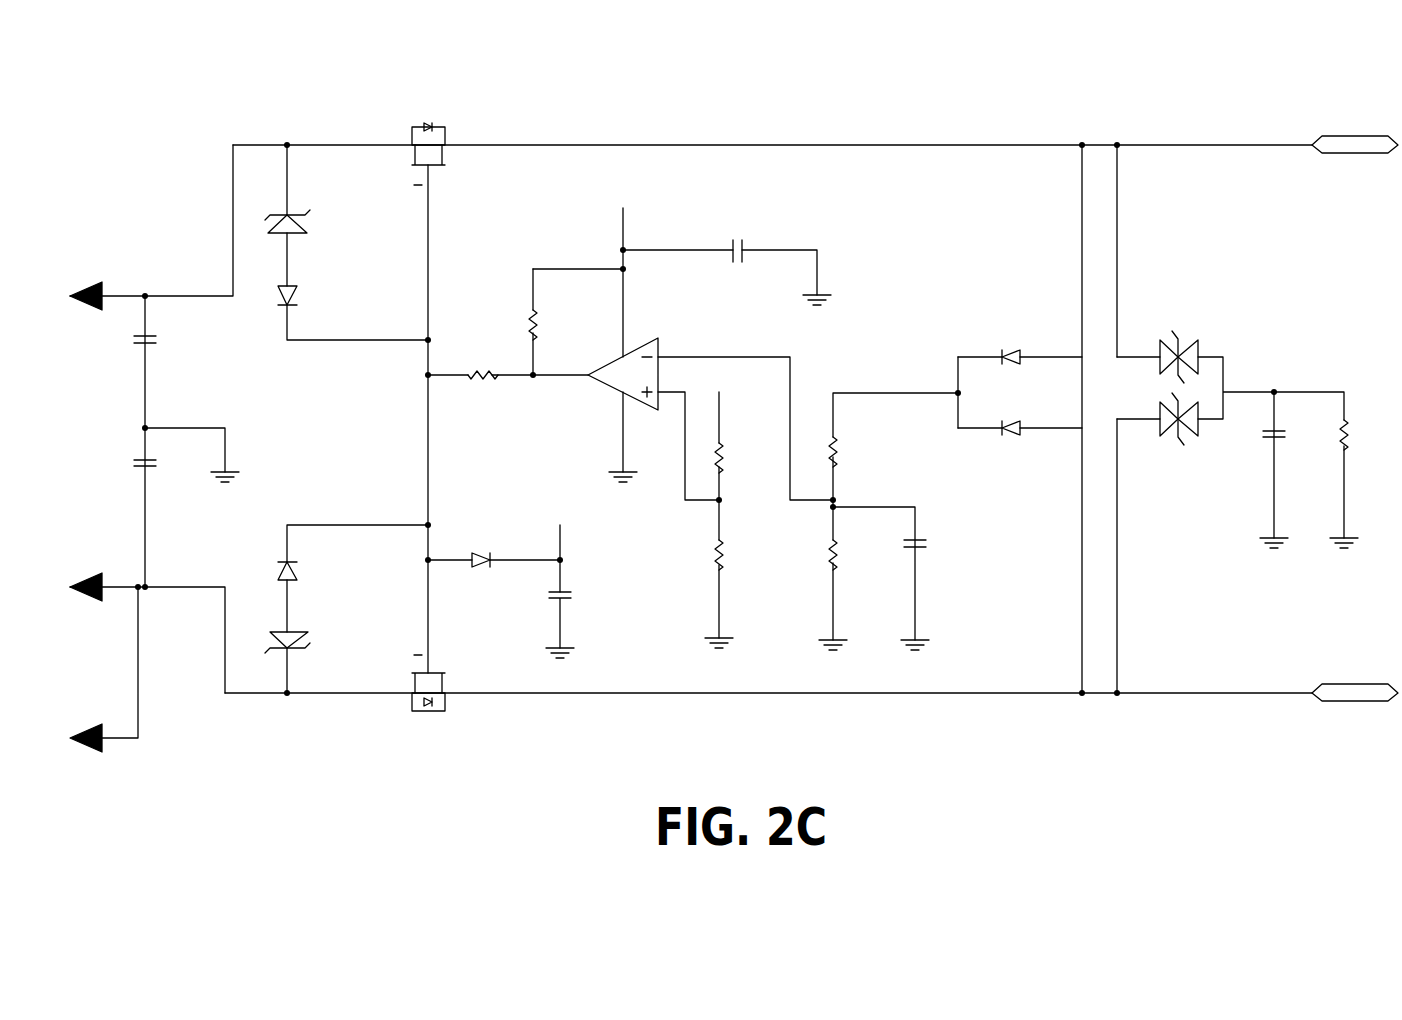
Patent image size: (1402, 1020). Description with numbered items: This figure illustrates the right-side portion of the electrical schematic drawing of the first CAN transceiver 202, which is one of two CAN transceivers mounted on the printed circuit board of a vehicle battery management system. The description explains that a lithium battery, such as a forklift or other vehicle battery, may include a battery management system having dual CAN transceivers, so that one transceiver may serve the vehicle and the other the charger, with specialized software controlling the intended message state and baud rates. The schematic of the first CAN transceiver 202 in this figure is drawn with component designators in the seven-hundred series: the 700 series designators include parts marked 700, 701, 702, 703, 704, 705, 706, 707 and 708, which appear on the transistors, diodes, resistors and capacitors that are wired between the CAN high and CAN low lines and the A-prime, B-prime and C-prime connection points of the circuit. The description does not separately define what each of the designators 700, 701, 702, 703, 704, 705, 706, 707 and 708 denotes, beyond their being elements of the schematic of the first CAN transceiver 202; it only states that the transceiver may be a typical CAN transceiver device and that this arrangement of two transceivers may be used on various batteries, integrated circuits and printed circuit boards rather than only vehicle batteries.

The first CAN transceiver 202 is at (175, 134).
The transistor Q700 / zener diode D700 / capacitor C700 700 is at (517, 191).
The diode D701 / resistor R701 / capacitor C701 / comparator U701A 701 is at (439, 387).
The transistor Q702 / TVS diode D702 / capacitor C702 702 is at (857, 536).
The resistor R703 / diode D703 703 is at (758, 380).
The diode D704 / resistor R704 704 is at (1180, 489).
The resistor R705 / diode D705 705 is at (604, 515).
The capacitor C706 / resistor R706 / diode D706 706 is at (502, 508).
The resistor R707 / capacitor C707 / zener diode D707 707 is at (614, 604).
The capacitor C708 / resistor R708 708 is at (707, 609).